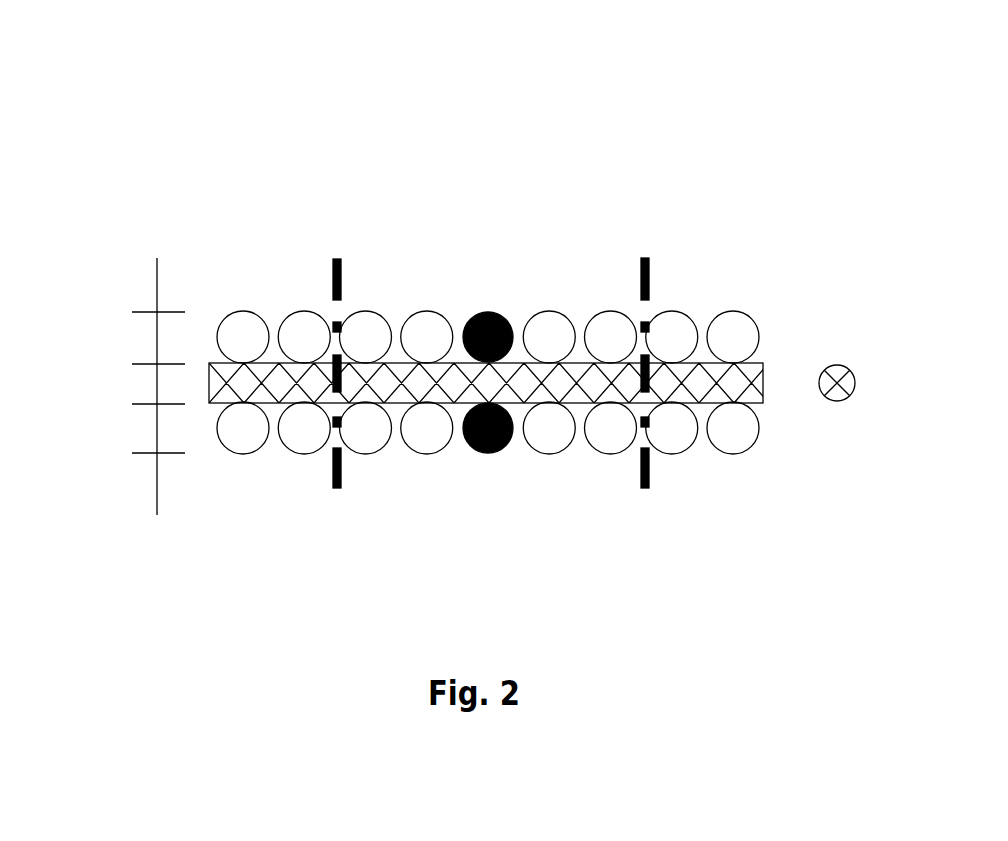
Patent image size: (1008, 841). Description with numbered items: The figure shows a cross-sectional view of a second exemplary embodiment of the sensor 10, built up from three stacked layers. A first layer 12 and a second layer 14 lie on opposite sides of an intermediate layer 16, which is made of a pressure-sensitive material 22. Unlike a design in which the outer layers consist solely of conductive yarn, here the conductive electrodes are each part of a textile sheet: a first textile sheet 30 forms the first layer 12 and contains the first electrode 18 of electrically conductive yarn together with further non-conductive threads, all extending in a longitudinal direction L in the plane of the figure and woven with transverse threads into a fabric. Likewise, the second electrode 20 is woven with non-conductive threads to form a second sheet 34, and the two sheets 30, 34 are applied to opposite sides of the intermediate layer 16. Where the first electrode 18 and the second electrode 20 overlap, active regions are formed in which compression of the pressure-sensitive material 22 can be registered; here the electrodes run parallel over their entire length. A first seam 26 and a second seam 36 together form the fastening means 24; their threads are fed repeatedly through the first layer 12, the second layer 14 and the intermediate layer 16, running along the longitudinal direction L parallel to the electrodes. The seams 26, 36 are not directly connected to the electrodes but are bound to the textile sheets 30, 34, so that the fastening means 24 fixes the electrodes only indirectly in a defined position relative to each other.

The sensor 10 is at (486, 145).
The first layer 12 is at (118, 347).
The second layer 14 is at (118, 424).
The intermediate layer 16 is at (118, 383).
The first electrode 18 is at (498, 312).
The second electrode 20 is at (493, 455).
The pressure-sensitive material 22 is at (750, 373).
The fastening means 24 is at (507, 365).
The first seam 26 is at (332, 266).
The first textile sheet 30 is at (488, 278).
The second sheet 34 is at (488, 499).
The second seam 36 is at (652, 468).
The longitudinal direction L is at (846, 383).